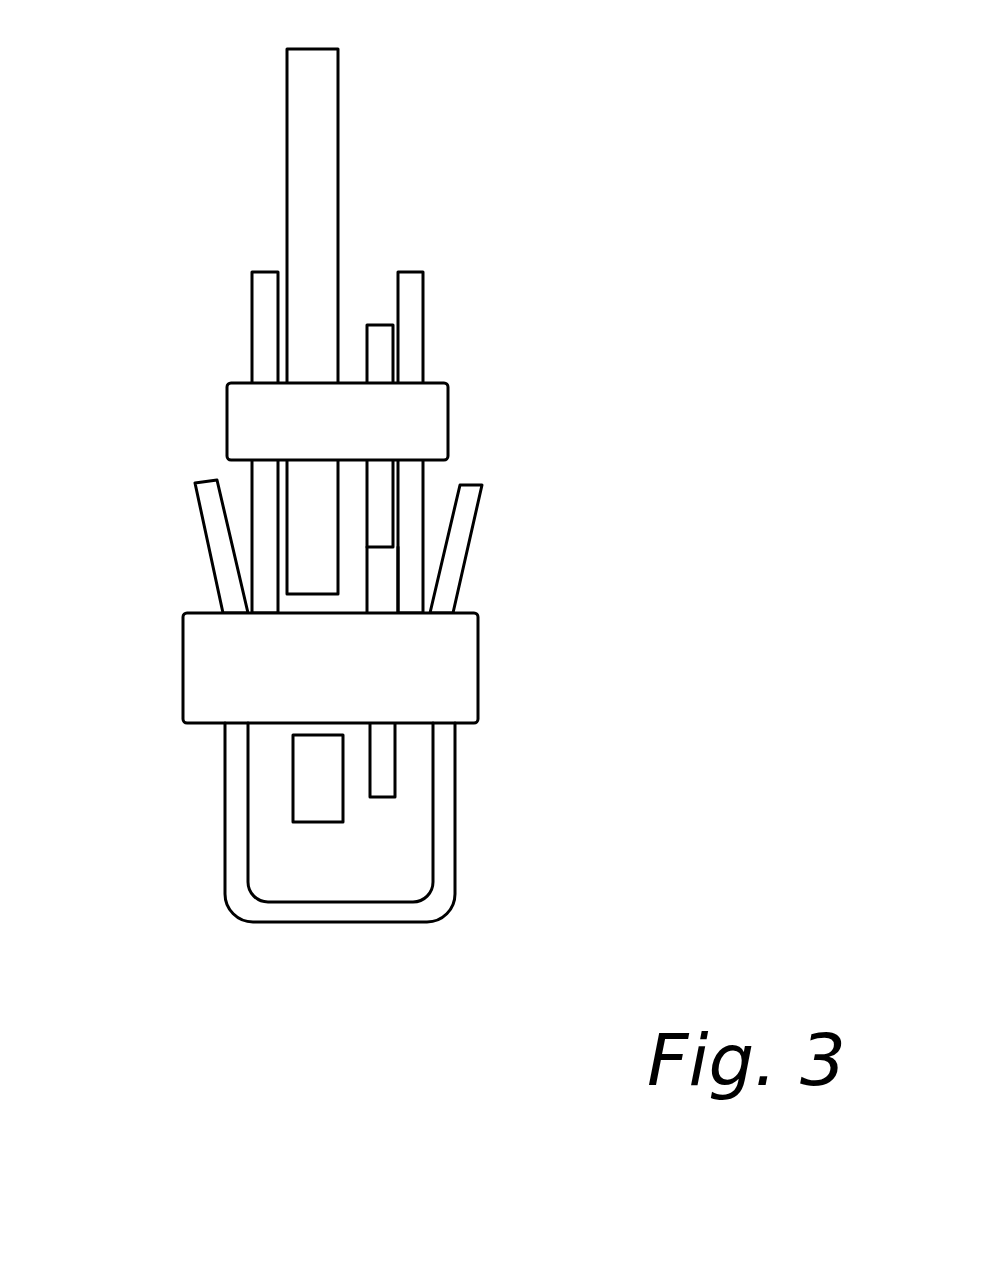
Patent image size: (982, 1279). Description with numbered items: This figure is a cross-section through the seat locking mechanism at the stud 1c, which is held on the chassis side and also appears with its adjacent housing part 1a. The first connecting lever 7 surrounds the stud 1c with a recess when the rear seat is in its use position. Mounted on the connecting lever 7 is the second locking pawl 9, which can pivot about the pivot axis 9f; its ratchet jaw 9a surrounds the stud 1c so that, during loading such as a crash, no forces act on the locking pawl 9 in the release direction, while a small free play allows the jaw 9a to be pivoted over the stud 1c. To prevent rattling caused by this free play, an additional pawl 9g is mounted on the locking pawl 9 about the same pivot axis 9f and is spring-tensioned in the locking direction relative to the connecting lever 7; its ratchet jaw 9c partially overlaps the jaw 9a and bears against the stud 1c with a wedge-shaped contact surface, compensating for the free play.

The second locking pawl 9 is at (338, 110).
The additional pawl 9g is at (376, 323).
The first connecting lever 7 is at (423, 312).
The pivot axis 9f is at (448, 410).
The ratchet jaw of additional pawl 9c is at (383, 590).
The stud 1c is at (478, 667).
The housing base 1a is at (455, 805).
The ratchet jaw 9a is at (320, 716).